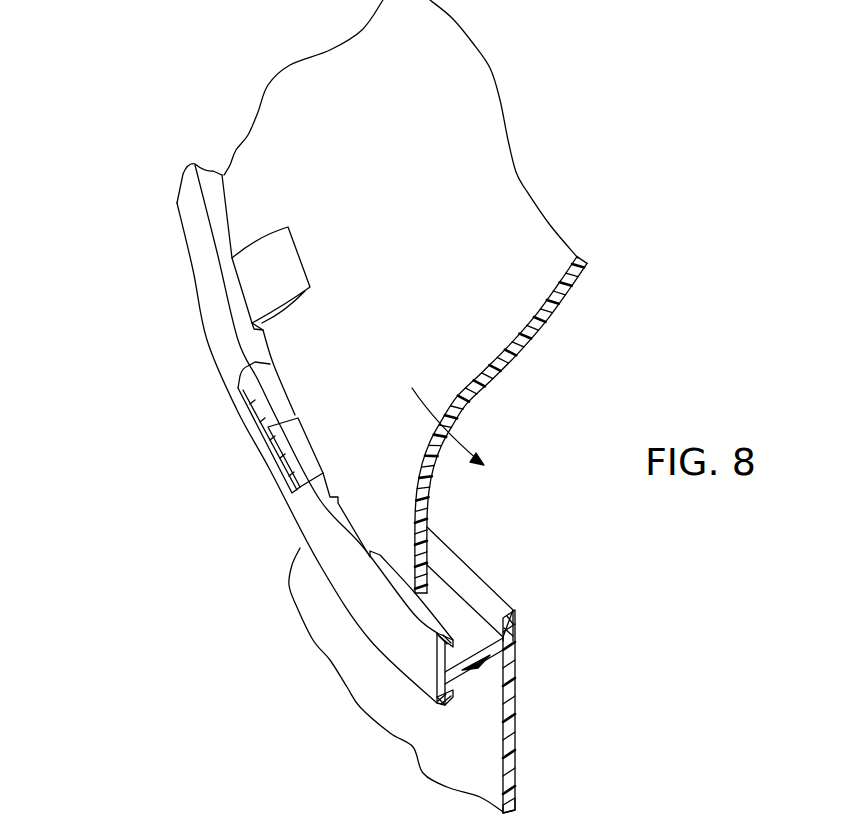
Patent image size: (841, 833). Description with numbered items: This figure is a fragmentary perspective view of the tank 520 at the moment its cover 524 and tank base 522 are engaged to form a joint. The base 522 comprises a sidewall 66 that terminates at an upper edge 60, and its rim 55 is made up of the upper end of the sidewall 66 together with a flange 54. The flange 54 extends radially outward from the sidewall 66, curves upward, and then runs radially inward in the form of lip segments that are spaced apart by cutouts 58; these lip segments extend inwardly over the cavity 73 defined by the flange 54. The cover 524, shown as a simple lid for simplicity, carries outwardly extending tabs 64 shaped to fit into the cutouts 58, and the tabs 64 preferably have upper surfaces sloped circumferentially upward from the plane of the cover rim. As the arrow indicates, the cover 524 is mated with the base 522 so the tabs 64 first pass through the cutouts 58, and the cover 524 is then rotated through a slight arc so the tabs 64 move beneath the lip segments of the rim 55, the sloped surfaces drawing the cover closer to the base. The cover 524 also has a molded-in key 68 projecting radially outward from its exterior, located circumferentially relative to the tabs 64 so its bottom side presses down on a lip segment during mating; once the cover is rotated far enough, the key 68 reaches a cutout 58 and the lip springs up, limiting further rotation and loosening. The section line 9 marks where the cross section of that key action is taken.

The section line for FIG. 9 is at (532, 122).
The flange 54 is at (365, 613).
The rim 55 is at (224, 367).
The cutouts 58 is at (352, 528).
The upper edge 60 is at (492, 600).
The tabs 64 is at (293, 452).
The sidewall 66 is at (515, 768).
The key 68 is at (258, 250).
The cavity 73 is at (471, 648).
The tank 520 is at (572, 511).
The tank base 522 is at (517, 690).
The cover 524 is at (553, 240).